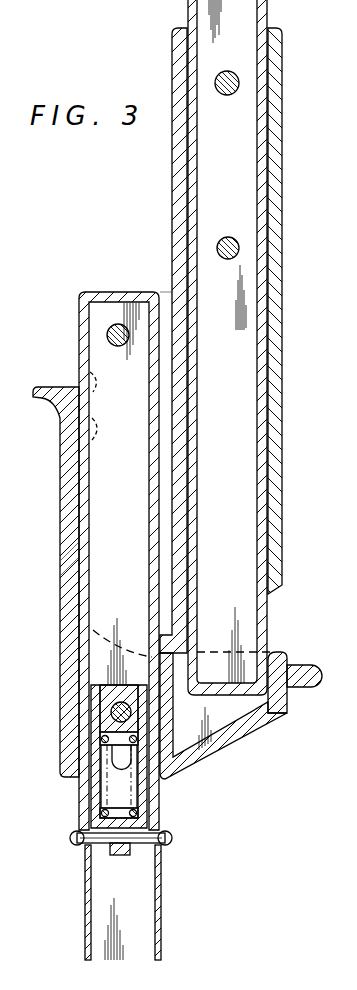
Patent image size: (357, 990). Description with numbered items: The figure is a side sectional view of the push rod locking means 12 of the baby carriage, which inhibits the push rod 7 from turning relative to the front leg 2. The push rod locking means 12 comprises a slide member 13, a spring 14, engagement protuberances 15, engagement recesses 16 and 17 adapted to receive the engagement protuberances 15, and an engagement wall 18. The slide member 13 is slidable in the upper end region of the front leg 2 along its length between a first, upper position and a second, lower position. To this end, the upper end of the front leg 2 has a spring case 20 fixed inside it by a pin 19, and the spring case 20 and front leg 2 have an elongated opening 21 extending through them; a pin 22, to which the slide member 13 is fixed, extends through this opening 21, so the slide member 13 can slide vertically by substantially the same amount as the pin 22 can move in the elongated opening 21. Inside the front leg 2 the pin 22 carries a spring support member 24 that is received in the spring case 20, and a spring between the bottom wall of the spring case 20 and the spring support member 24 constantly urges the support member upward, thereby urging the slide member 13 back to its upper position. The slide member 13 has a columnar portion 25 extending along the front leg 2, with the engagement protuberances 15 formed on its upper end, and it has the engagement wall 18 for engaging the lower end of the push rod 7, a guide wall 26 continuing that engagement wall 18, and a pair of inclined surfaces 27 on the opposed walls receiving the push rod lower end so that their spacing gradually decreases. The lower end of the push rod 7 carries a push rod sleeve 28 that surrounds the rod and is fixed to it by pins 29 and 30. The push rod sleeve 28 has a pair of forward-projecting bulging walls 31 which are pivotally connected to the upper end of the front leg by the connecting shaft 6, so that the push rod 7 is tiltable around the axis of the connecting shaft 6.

The front leg 2 is at (163, 912).
The connecting shaft 6 is at (109, 326).
The push rod 7 is at (284, 156).
The push rod locking means 12 is at (84, 251).
The slide member 13 is at (62, 485).
The spring 14 is at (163, 789).
The engagement protuberances 15 is at (82, 370).
The engagement recess 16 is at (90, 383).
The engagement recess 17 is at (99, 426).
The engagement wall 18 is at (266, 718).
The pin 19 is at (163, 860).
The spring case 20 is at (163, 820).
The elongated opening 21 is at (95, 788).
The pin 22 is at (112, 712).
The spring support member 24 is at (110, 690).
The columnar portion 25 is at (62, 570).
The guide wall 26 is at (304, 665).
The inclined surfaces 27 is at (275, 652).
The push rod sleeve 28 is at (281, 280).
The pin 29 is at (237, 77).
The pin 30 is at (239, 241).
The bulging walls 31 is at (165, 293).